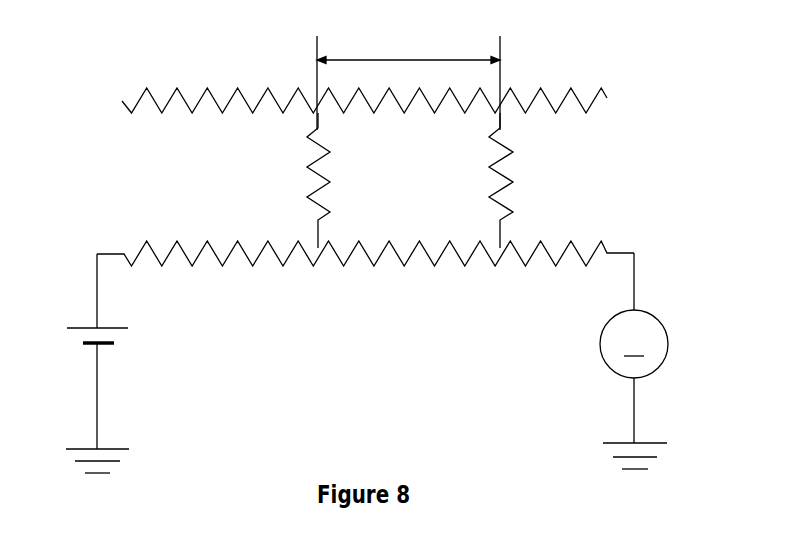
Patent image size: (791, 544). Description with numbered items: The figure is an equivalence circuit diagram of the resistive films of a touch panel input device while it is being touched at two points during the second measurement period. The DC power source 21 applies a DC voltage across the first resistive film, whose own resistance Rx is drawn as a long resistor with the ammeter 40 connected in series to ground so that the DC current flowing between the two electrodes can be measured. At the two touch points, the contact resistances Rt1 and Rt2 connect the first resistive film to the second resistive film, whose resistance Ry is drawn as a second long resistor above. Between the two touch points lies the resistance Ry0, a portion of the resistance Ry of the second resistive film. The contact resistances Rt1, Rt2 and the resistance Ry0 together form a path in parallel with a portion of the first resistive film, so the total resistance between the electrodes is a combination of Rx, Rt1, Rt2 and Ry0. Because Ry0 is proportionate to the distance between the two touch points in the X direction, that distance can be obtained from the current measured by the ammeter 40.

The DC power source 21 is at (78, 337).
The ammeter 40 is at (660, 319).
The resistance of the resistive film 12 Ry is at (541, 88).
The resistance of the resistive film 12 between the two touch points Ry0 is at (408, 80).
The contact resistance Rt1 is at (307, 167).
The contact resistance Rt2 is at (489, 167).
The resistance of the resistive film 11 Rx is at (572, 240).